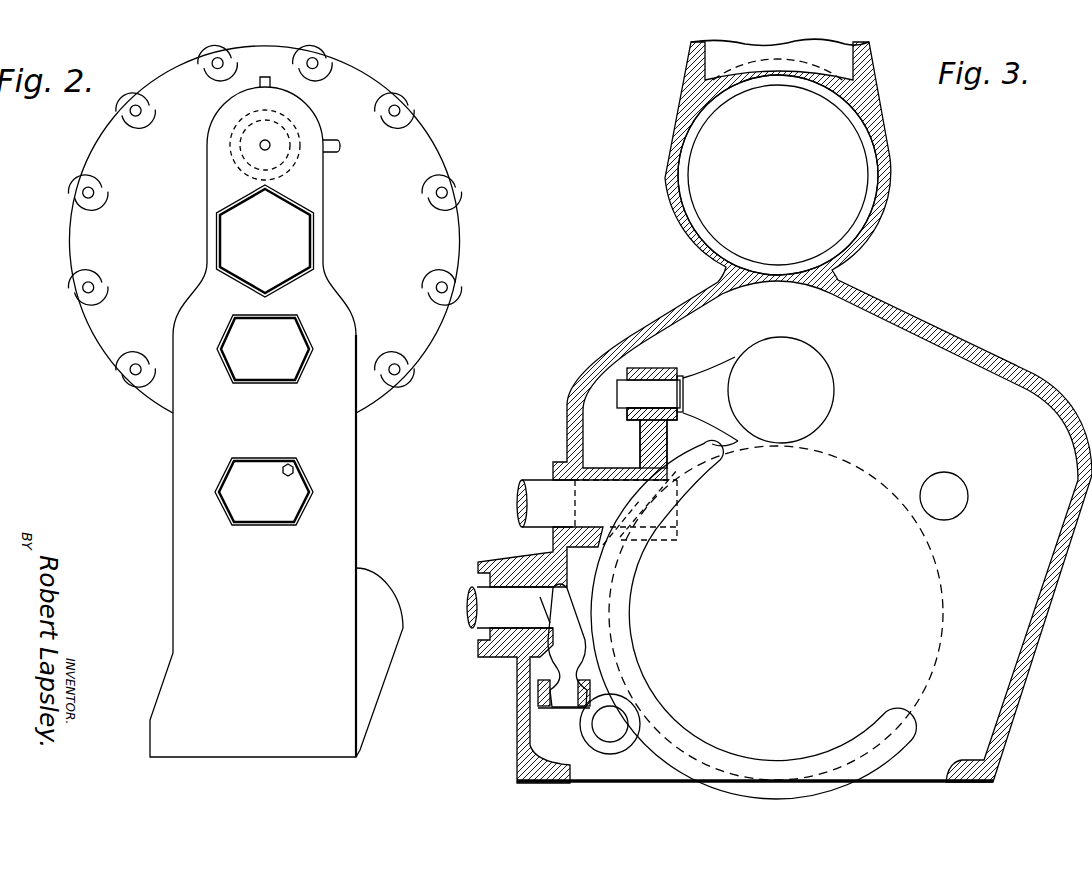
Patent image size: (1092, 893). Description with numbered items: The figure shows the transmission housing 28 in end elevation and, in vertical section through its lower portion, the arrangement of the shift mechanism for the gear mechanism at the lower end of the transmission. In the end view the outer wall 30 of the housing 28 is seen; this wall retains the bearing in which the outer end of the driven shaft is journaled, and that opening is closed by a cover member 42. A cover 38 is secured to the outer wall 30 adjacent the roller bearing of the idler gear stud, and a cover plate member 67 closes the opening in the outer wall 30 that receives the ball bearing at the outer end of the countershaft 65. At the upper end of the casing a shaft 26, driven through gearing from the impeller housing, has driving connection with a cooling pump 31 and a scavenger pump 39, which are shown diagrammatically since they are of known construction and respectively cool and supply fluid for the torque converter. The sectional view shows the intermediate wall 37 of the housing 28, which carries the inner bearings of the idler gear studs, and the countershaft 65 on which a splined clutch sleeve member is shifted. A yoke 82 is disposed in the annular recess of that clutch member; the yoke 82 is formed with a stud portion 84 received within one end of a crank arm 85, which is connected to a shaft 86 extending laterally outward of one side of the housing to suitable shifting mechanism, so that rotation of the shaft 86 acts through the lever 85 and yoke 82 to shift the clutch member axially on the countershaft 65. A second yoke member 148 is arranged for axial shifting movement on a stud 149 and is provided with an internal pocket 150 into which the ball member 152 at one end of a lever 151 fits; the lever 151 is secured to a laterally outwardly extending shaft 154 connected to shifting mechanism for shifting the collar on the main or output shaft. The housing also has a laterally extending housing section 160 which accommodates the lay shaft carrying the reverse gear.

In FIG. 2, the shaft 26 is at (268, 147).
In FIG. 2, the transmission housing 28 is at (422, 150).
In FIG. 2, the outer wall 30 is at (202, 297).
In FIG. 2, the cooling pump 31 is at (233, 140).
In FIG. 2, the cover 38 is at (237, 367).
In FIG. 2, the scavenger pump 39 is at (292, 128).
In FIG. 2, the cover member 42 is at (303, 232).
In FIG. 2, the cover plate member 67 is at (253, 515).
In FIG. 2, the laterally extending housing section 160 is at (375, 590).
In FIG. 3, the laterally extending housing section 160 is at (1028, 398).
In FIG. 3, the intermediate wall 37 is at (668, 157).
In FIG. 3, the countershaft 65 is at (818, 380).
In FIG. 3, the yoke 82 is at (715, 367).
In FIG. 3, the stud portion 84 is at (625, 388).
In FIG. 3, the crank arm 85 is at (648, 368).
In FIG. 3, the shaft 86 is at (530, 487).
In FIG. 3, the yoke member 148 is at (627, 637).
In FIG. 3, the stud 149 is at (617, 717).
In FIG. 3, the internal pocket 150 is at (553, 710).
In FIG. 3, the lever 151 is at (570, 630).
In FIG. 3, the ball member 152 is at (570, 690).
In FIG. 3, the shaft 154 is at (478, 618).